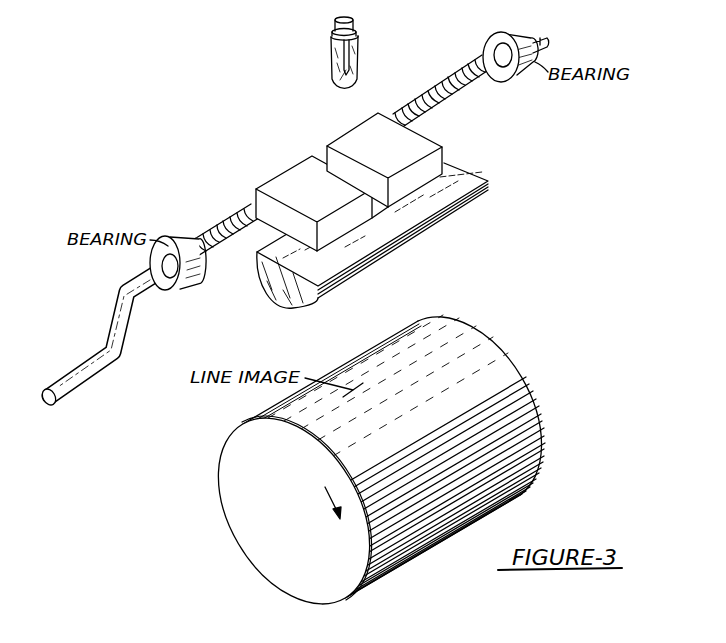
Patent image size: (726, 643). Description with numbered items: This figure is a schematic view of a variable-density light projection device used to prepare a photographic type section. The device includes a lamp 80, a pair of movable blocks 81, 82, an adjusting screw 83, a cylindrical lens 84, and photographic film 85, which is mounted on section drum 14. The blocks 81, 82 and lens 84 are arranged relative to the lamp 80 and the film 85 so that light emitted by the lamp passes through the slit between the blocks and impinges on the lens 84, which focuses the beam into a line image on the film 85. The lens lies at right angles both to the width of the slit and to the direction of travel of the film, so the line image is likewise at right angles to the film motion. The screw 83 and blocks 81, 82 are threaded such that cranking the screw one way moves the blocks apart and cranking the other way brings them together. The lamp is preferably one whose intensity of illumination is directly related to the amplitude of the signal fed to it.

The section drum 14 is at (235, 486).
The lamp 80 is at (358, 60).
The movable block 81 is at (288, 173).
The movable block 82 is at (358, 131).
The adjusting screw 83 is at (240, 221).
The cylindrical lens 84 is at (428, 222).
The photographic film 85 is at (502, 368).